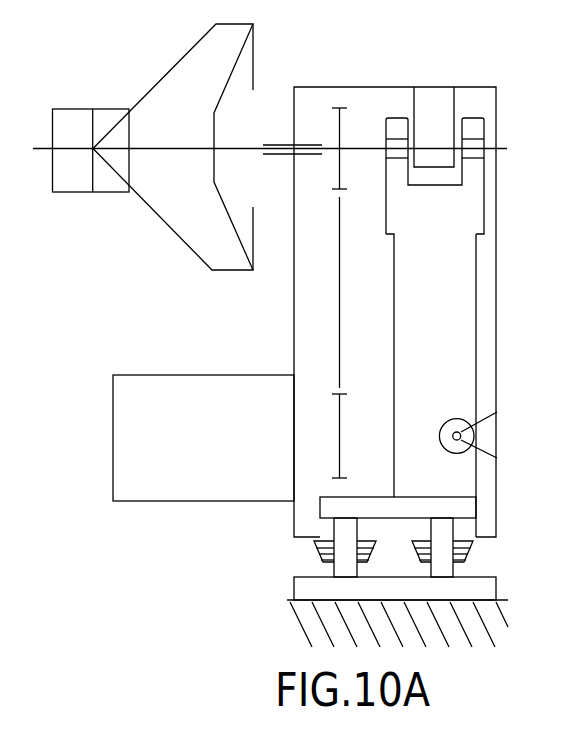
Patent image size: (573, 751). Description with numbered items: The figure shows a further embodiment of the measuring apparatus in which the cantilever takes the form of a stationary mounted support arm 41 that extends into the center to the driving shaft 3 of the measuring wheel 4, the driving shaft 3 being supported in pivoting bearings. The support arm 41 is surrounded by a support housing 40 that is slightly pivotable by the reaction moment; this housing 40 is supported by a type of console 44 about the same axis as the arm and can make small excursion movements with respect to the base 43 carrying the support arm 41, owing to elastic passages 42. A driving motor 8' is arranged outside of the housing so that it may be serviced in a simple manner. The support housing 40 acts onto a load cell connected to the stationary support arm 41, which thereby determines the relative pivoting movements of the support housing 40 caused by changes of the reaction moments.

The driving shaft 3 is at (246, 148).
The measuring wheel 4 is at (153, 82).
The driving motor 8' is at (203, 410).
The support housing 40 is at (294, 353).
The support arm 41 is at (393, 317).
The elastic passages 42 is at (316, 553).
The base 43 is at (313, 627).
The console 44 is at (422, 110).